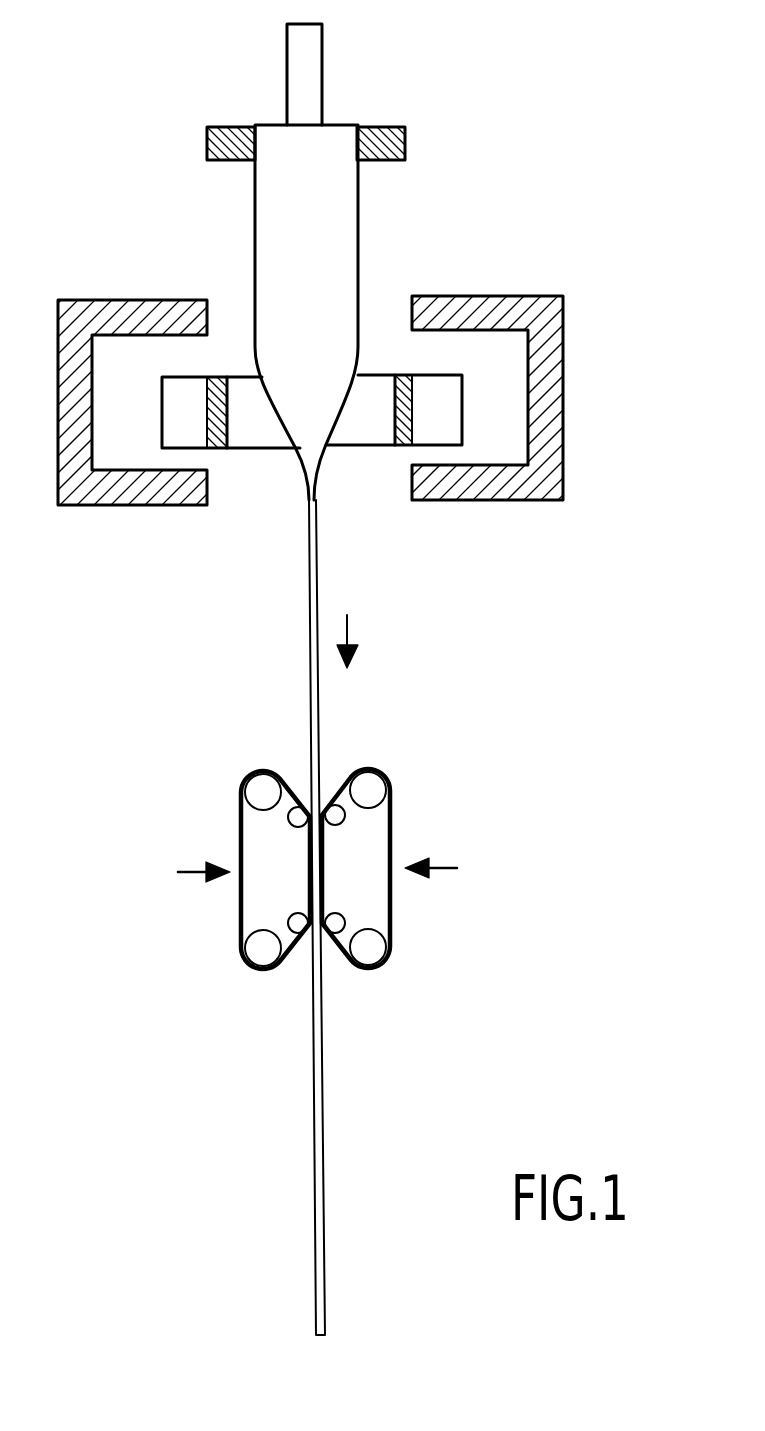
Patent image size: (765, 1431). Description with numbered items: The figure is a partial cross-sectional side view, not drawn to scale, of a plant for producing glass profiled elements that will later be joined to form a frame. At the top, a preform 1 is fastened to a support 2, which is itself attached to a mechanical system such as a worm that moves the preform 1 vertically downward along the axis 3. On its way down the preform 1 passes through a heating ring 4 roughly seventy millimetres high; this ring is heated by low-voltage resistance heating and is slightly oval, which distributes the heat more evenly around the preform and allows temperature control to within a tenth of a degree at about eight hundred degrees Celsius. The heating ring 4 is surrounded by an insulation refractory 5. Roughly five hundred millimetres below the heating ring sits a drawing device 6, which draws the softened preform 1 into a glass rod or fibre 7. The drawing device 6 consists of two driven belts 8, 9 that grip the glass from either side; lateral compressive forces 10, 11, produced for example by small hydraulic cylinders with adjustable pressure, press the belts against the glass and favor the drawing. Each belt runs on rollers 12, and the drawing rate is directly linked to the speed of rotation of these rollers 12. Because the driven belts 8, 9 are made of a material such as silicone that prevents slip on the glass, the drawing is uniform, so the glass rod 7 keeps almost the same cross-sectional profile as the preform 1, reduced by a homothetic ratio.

The preform 1 is at (342, 222).
The support 2 is at (403, 135).
The axis 3 is at (312, 47).
The heating ring 4 is at (433, 412).
The insulation refractory 5 is at (547, 372).
The drawing device 6 is at (379, 741).
The glass rod or fibre 7 is at (310, 618).
The driven belt 8 is at (392, 900).
The driven belt 9 is at (240, 897).
The lateral compressive force 10 is at (195, 868).
The lateral compressive force 11 is at (443, 868).
The rollers 12 is at (268, 790).